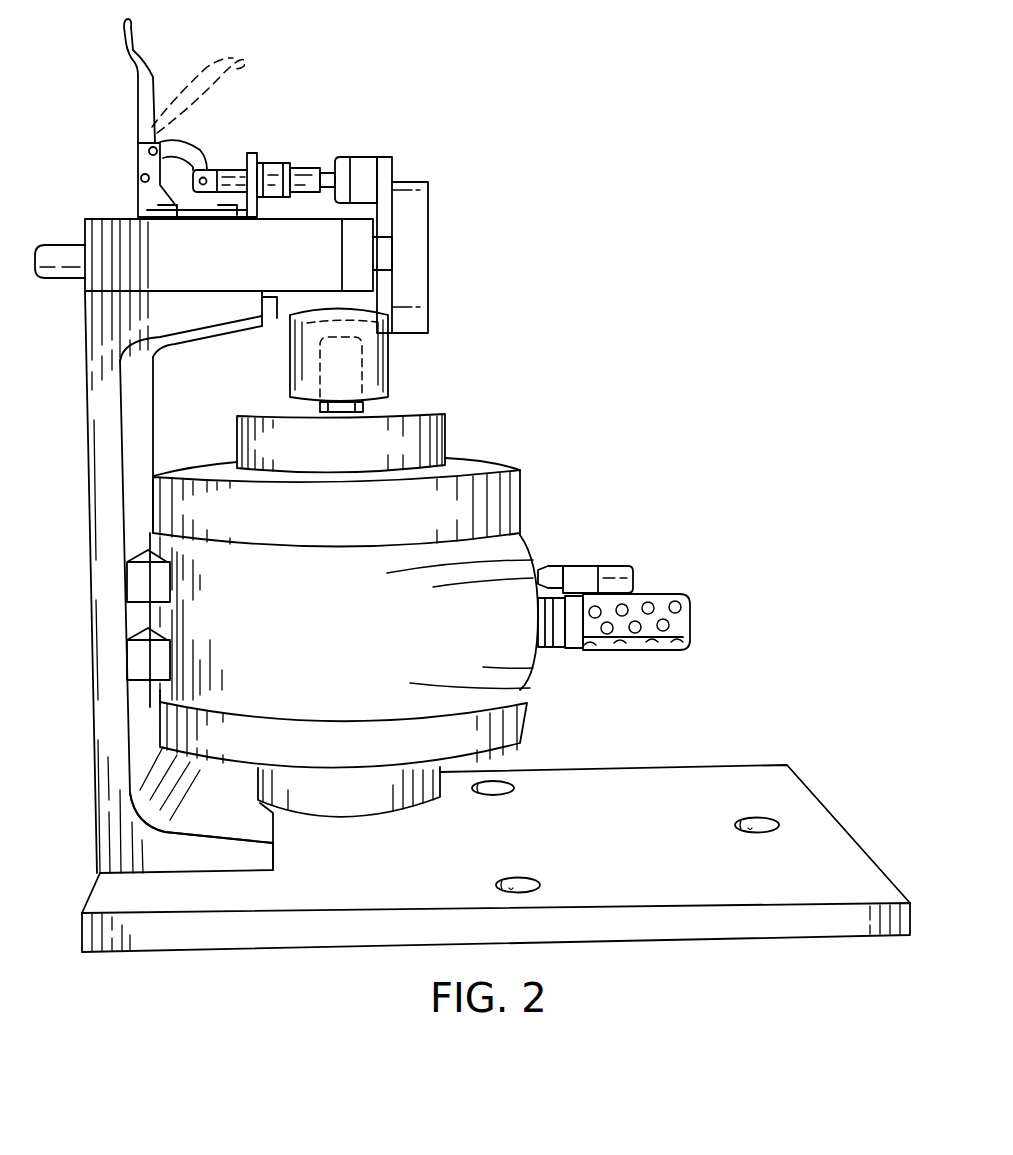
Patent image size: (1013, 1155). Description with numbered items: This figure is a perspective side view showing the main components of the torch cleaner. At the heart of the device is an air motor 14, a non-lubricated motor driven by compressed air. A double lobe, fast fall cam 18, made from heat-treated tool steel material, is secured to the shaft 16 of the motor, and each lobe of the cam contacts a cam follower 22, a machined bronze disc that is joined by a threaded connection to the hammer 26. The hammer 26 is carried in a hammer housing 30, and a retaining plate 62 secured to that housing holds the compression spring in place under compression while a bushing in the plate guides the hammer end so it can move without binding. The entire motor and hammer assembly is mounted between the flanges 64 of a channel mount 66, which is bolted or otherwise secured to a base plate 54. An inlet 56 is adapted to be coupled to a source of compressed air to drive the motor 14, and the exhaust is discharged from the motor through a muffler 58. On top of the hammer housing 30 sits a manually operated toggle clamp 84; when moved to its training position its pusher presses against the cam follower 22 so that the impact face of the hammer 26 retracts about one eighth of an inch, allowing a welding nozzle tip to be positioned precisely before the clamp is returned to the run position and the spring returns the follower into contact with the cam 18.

The air motor 14 is at (317, 635).
The shaft 16 is at (348, 357).
The double lobe, fast fall cam 18 is at (393, 377).
The cam follower 22 is at (428, 223).
The hammer 26 is at (63, 243).
The hammer housing 30 is at (230, 269).
The base plate 54 is at (617, 855).
The inlet 56 is at (615, 570).
The muffler 58 is at (690, 615).
The retaining plate 62 is at (355, 263).
The flanges 64 is at (227, 330).
The channel mount 66 is at (108, 545).
The toggle clamp 84 is at (225, 145).